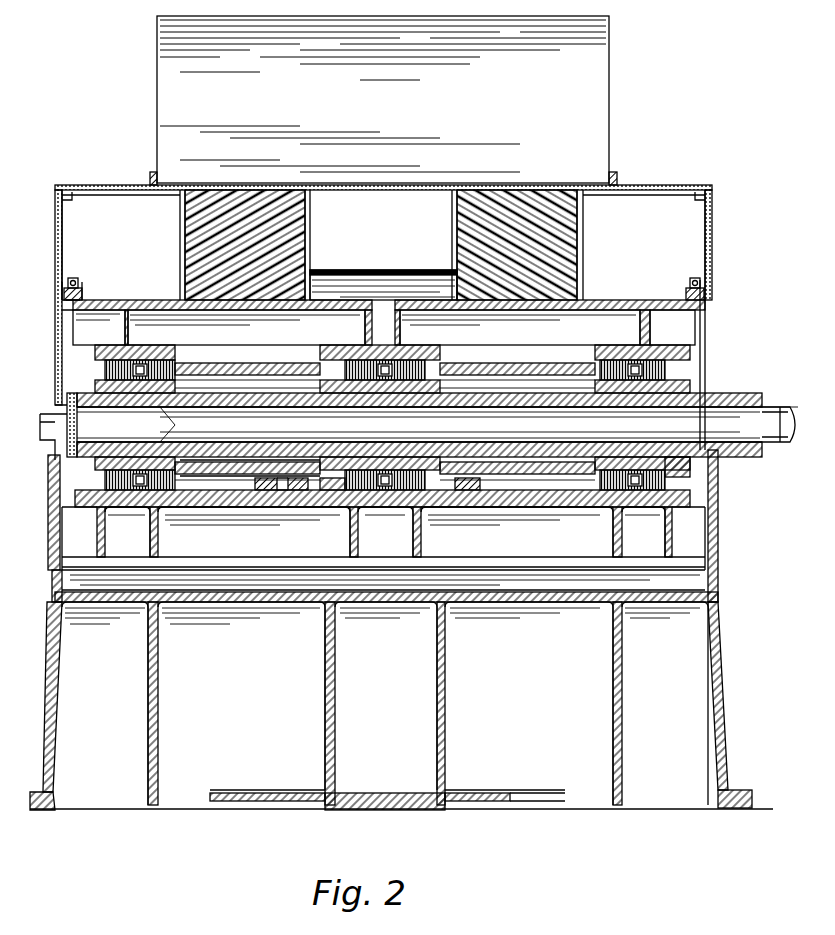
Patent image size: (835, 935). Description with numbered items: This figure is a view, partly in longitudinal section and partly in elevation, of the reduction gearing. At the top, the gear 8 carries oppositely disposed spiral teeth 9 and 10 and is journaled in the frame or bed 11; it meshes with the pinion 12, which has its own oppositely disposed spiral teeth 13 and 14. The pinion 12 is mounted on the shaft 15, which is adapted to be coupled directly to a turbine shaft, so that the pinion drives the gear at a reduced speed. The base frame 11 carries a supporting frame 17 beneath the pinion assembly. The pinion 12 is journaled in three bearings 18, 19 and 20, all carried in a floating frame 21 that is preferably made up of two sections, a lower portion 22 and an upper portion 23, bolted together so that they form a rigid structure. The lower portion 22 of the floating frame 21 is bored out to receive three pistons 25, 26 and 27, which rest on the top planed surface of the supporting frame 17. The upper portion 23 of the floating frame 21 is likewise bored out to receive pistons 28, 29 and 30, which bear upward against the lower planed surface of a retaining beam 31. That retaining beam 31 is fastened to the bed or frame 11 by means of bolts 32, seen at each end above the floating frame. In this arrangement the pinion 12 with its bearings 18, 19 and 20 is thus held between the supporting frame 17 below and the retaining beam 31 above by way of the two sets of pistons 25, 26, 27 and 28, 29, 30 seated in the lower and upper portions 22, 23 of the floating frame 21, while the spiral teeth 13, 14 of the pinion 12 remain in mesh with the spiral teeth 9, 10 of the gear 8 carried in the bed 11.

The gear 8 is at (386, 268).
The spiral teeth 9 is at (306, 218).
The spiral teeth 10 is at (460, 212).
The frame or bed 11 is at (718, 622).
The pinion 12 is at (722, 398).
The spiral teeth 13 is at (270, 470).
The spiral teeth 14 is at (543, 468).
The shaft 15 is at (782, 436).
The supporting frame 17 is at (418, 528).
The bearing 18 is at (85, 470).
The bearing 19 is at (402, 470).
The bearing 20 is at (690, 460).
The floating frame 21 is at (222, 484).
The lower portion of floating frame 22 is at (277, 482).
The upper portion of floating frame 23 is at (243, 368).
The piston 25 is at (95, 492).
The piston 26 is at (347, 484).
The piston 27 is at (652, 488).
The piston 28 is at (150, 364).
The piston 29 is at (420, 354).
The piston 30 is at (626, 358).
The retaining beam 31 is at (548, 352).
The bolts 32 is at (110, 278).